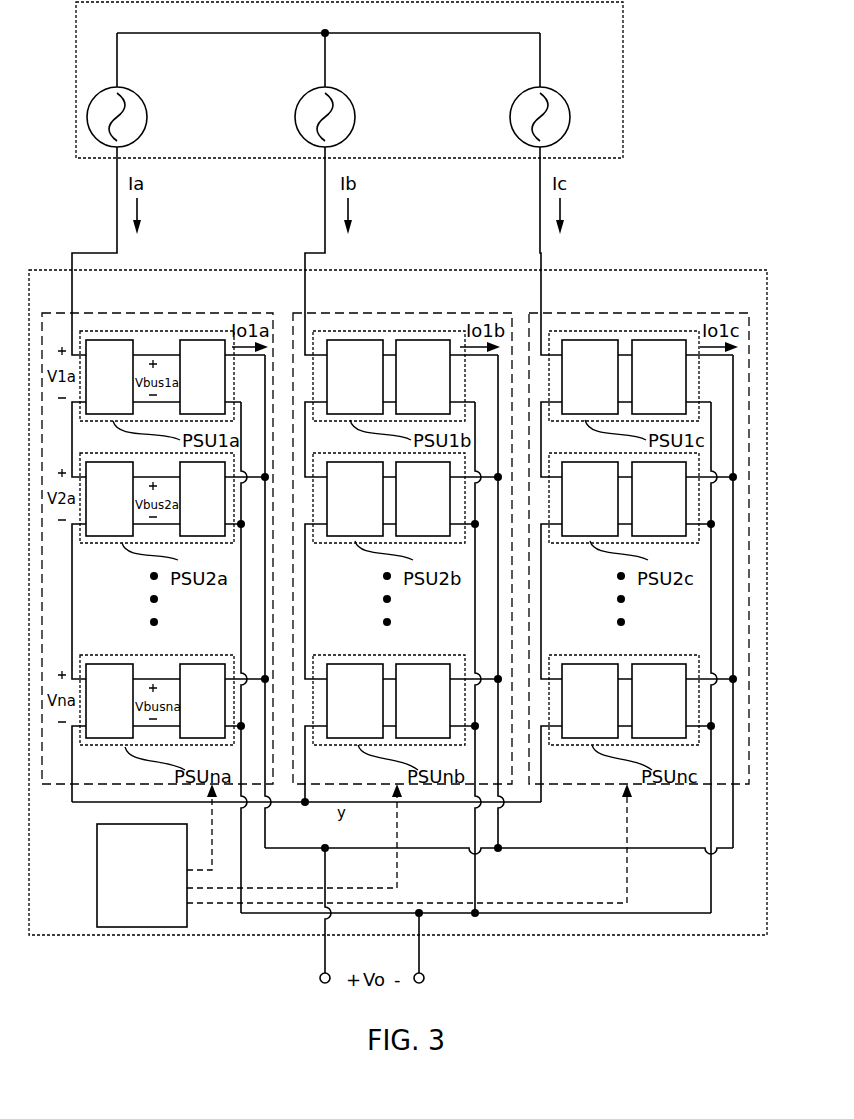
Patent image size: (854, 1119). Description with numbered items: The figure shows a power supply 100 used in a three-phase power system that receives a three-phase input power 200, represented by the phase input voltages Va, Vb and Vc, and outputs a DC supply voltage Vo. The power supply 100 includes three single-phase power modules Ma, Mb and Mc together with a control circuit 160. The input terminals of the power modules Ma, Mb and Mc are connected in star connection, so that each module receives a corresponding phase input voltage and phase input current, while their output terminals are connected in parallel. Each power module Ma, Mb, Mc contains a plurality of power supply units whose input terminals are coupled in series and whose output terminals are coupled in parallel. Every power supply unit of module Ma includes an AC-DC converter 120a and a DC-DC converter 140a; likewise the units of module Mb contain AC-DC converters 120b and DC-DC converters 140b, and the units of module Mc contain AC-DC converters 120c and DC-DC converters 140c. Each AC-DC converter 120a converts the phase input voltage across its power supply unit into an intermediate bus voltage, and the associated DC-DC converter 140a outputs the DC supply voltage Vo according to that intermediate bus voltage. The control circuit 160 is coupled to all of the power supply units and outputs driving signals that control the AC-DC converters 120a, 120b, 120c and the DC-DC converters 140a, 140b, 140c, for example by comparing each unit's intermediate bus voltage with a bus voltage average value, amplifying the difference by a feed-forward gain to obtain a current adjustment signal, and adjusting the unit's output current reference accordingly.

The power supply 100 is at (713, 268).
The three-phase AC power source 200 is at (623, 117).
The AC-DC converter 120a is at (126, 387).
The DC-DC converter 140a is at (220, 387).
The AC/DC converter of phase b power supply units 120b is at (373, 387).
The DC/DC converter of phase b power supply units 140b is at (441, 387).
The AC/DC converter of phase c power supply units 120c is at (608, 387).
The DC/DC converter of phase c power supply units 140c is at (677, 387).
The control circuit 160 is at (157, 887).
The single-phase power module Ma is at (208, 313).
The single-phase power module Mb is at (455, 313).
The single-phase power module Mc is at (680, 313).